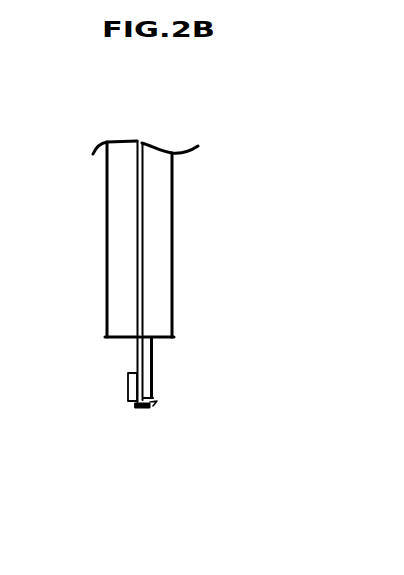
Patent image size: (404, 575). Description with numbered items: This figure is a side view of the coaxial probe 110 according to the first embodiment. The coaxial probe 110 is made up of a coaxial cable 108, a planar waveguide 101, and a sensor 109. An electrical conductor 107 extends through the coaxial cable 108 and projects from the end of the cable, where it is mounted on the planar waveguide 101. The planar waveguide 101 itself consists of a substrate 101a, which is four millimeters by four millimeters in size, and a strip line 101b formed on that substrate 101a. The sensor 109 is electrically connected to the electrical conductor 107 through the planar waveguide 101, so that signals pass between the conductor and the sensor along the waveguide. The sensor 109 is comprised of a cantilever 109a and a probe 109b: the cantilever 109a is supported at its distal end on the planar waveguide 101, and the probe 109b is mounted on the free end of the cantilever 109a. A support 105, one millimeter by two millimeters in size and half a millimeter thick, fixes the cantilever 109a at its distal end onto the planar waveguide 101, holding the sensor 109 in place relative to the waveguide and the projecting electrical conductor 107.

The coaxial probe 110 is at (264, 163).
The electrical conductor 107 is at (137, 201).
The coaxial cable 108 is at (210, 148).
The planar waveguide 101 is at (277, 345).
The substrate 101a is at (154, 374).
The strip line 101b is at (154, 351).
The support 105 is at (128, 386).
The sensor 109 is at (207, 467).
The cantilever 109a is at (128, 404).
The probe 109b is at (145, 408).